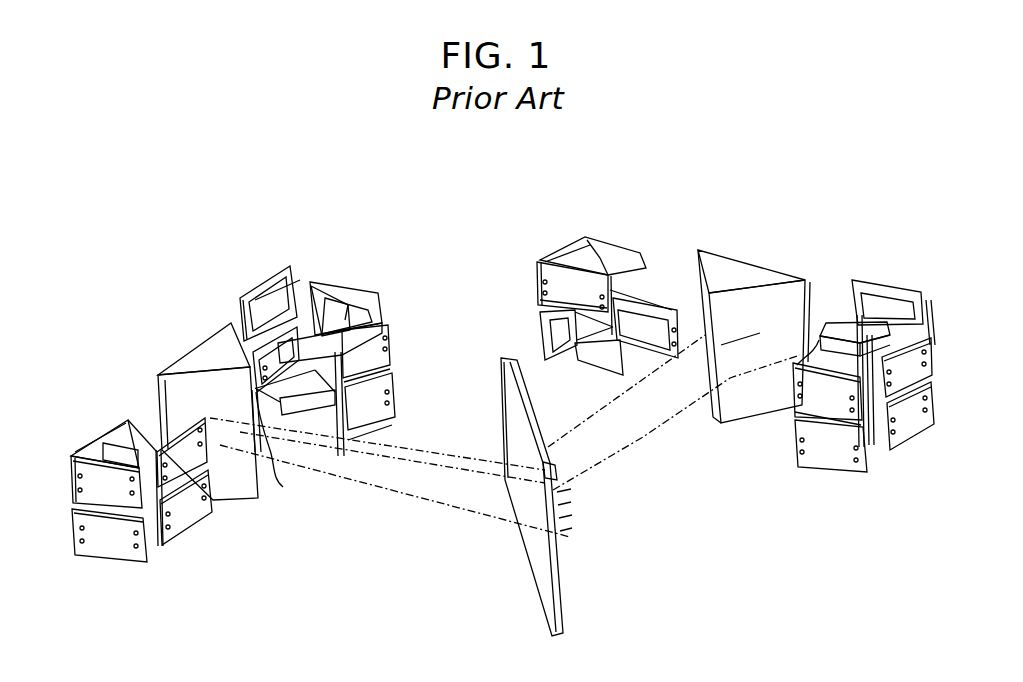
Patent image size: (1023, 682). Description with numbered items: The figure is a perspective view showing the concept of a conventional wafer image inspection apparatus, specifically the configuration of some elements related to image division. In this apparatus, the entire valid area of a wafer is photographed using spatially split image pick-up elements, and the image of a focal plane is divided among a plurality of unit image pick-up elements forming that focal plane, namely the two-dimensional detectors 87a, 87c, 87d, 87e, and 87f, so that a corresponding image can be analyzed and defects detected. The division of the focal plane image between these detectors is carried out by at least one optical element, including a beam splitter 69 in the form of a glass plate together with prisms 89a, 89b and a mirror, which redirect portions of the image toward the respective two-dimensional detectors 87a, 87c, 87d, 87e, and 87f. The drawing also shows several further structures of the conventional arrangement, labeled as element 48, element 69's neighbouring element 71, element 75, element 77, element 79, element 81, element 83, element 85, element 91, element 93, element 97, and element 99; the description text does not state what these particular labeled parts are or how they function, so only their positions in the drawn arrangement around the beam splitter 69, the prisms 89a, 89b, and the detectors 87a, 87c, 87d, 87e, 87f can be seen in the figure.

The vehicle body 48 is at (600, 523).
The beam splitter 69 is at (565, 625).
The left hinge assembly 71 is at (304, 278).
The rear panel 75 is at (757, 258).
The pivot axis 77 is at (587, 420).
The panel face 79 is at (765, 358).
The frame member 81 is at (690, 321).
The right hinge assembly 83 is at (865, 362).
The bracket assembly 85 is at (548, 236).
The two-dimensional detector 87a is at (925, 312).
The two-dimensional detector 87c is at (920, 355).
The two-dimensional detector 87d is at (922, 410).
The two-dimensional detector 87e is at (832, 450).
The two-dimensional detector 87f is at (800, 397).
The prism 89a is at (855, 312).
The prism 89b is at (817, 338).
The panel 91 is at (205, 357).
The pivot axis 93 is at (437, 458).
The cable 97 is at (282, 448).
The hinge plate assembly 99 is at (103, 576).